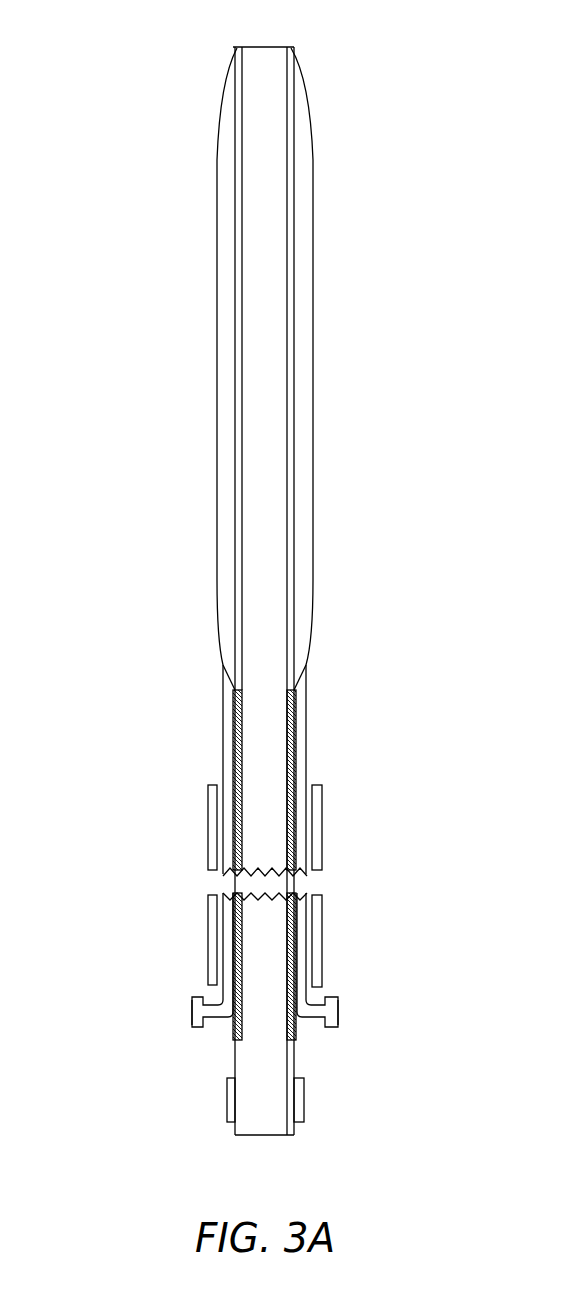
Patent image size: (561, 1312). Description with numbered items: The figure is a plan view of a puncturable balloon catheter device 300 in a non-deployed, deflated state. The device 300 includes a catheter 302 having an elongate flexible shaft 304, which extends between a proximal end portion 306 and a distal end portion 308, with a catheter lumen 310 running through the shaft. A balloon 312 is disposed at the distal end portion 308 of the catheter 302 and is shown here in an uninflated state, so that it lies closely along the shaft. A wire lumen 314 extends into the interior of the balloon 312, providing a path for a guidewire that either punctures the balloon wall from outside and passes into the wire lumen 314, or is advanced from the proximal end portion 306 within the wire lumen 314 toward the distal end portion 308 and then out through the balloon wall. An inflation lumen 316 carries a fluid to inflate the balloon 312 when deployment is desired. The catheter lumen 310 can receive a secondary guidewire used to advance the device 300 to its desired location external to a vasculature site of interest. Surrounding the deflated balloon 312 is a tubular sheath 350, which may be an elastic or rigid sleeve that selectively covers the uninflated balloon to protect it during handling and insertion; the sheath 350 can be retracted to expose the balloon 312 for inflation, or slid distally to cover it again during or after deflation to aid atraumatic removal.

The puncturable balloon catheter device 300 is at (133, 46).
The catheter 302 is at (295, 1050).
The elongate flexible shaft 304 is at (235, 603).
The proximal end portion 306 is at (133, 1034).
The distal end portion 308 is at (380, 217).
The catheter lumen 310 is at (265, 743).
The balloon 312 is at (302, 432).
The wire lumen 314 is at (225, 742).
The inflation lumen 316 is at (302, 765).
The tubular sheath 350 is at (322, 807).